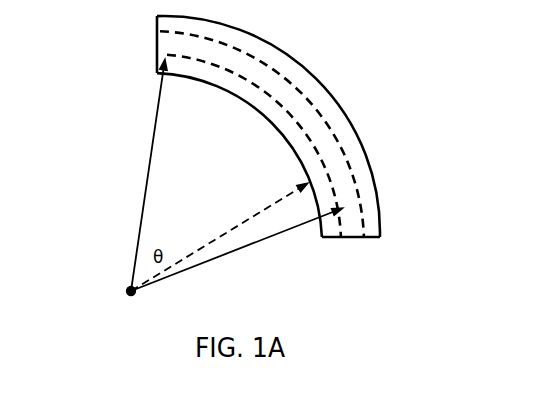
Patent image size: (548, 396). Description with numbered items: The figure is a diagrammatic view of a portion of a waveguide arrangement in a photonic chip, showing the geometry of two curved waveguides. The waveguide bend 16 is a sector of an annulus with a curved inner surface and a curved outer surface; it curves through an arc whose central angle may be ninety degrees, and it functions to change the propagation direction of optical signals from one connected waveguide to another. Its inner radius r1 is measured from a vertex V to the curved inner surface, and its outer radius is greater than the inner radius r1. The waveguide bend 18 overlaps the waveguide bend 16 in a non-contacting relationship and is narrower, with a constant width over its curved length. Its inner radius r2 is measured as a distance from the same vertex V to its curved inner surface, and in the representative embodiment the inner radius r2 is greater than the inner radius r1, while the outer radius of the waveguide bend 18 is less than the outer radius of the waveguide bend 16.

The waveguide bend 16 is at (365, 162).
The waveguide bend 18 is at (308, 93).
The vertex V is at (127, 308).
The inner radius r2 is at (216, 175).
The inner radius r1 is at (219, 237).